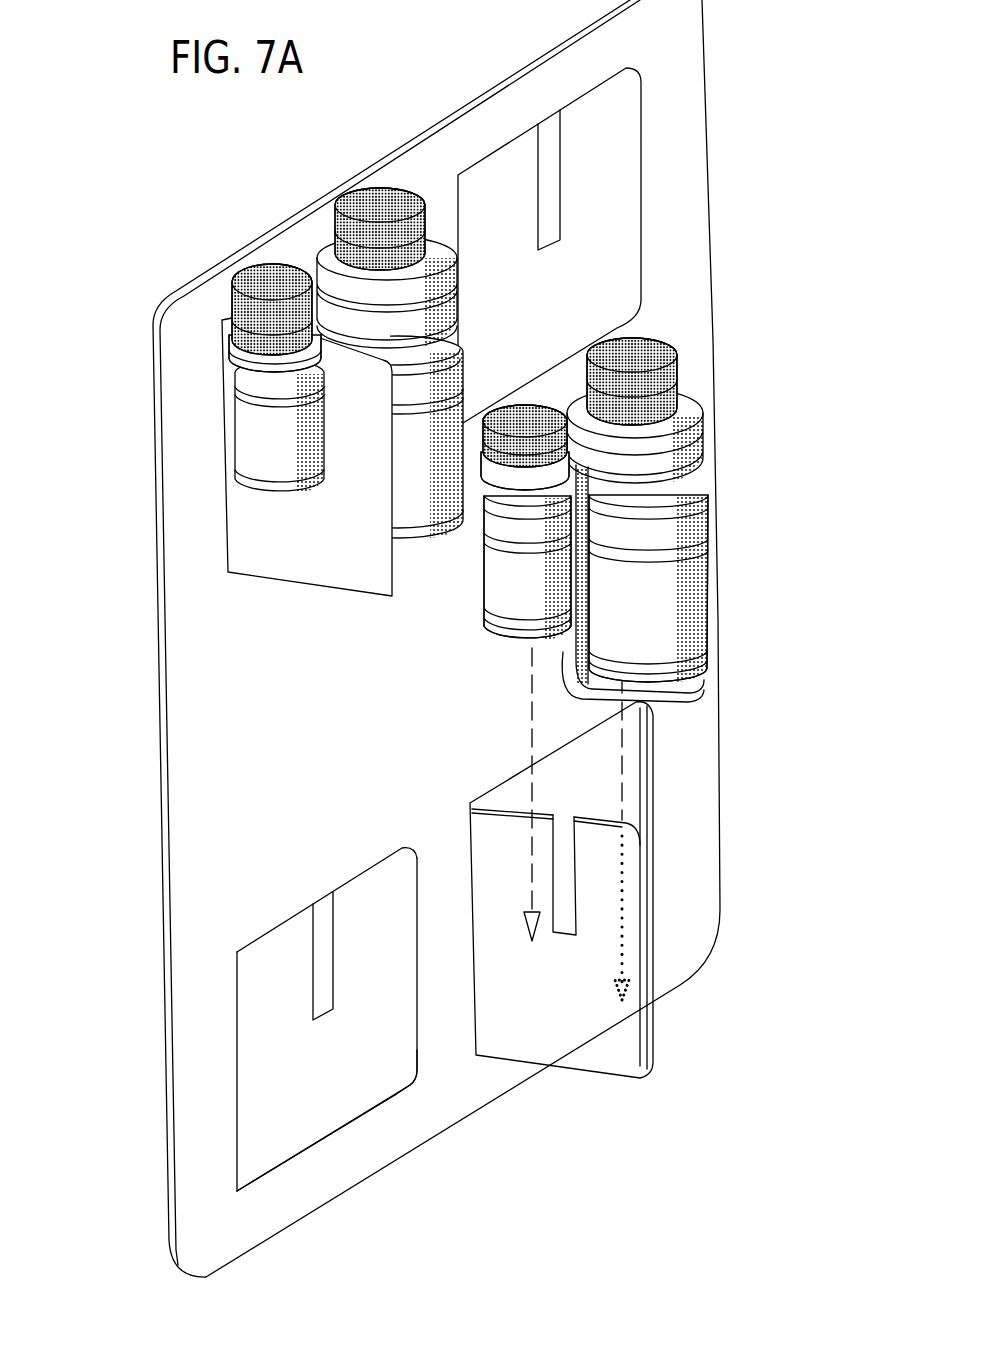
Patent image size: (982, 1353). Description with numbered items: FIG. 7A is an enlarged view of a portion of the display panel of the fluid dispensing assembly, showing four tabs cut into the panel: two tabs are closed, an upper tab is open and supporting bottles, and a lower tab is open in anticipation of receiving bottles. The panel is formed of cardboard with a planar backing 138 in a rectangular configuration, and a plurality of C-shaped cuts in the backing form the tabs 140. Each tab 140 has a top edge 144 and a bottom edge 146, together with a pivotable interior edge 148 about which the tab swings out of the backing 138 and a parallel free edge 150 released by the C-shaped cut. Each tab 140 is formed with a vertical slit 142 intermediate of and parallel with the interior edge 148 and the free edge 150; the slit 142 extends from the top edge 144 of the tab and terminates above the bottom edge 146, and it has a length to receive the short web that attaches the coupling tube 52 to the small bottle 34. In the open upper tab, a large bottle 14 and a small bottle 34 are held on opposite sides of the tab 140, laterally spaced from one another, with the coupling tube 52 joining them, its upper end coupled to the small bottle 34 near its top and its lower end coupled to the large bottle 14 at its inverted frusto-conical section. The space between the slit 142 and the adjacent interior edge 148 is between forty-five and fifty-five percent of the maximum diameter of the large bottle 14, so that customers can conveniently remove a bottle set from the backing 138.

The large bottle 14 is at (647, 602).
The small bottle 34 is at (270, 430).
The coupling tube 52 is at (660, 688).
The planar backing 138 is at (247, 685).
The tab 140 is at (277, 1053).
The vertical slit 142 is at (327, 905).
The top edge 144 is at (267, 928).
The bottom edge 146 is at (338, 1134).
The pivotable interior edge 148 is at (237, 1132).
The free edge 150 is at (420, 1063).